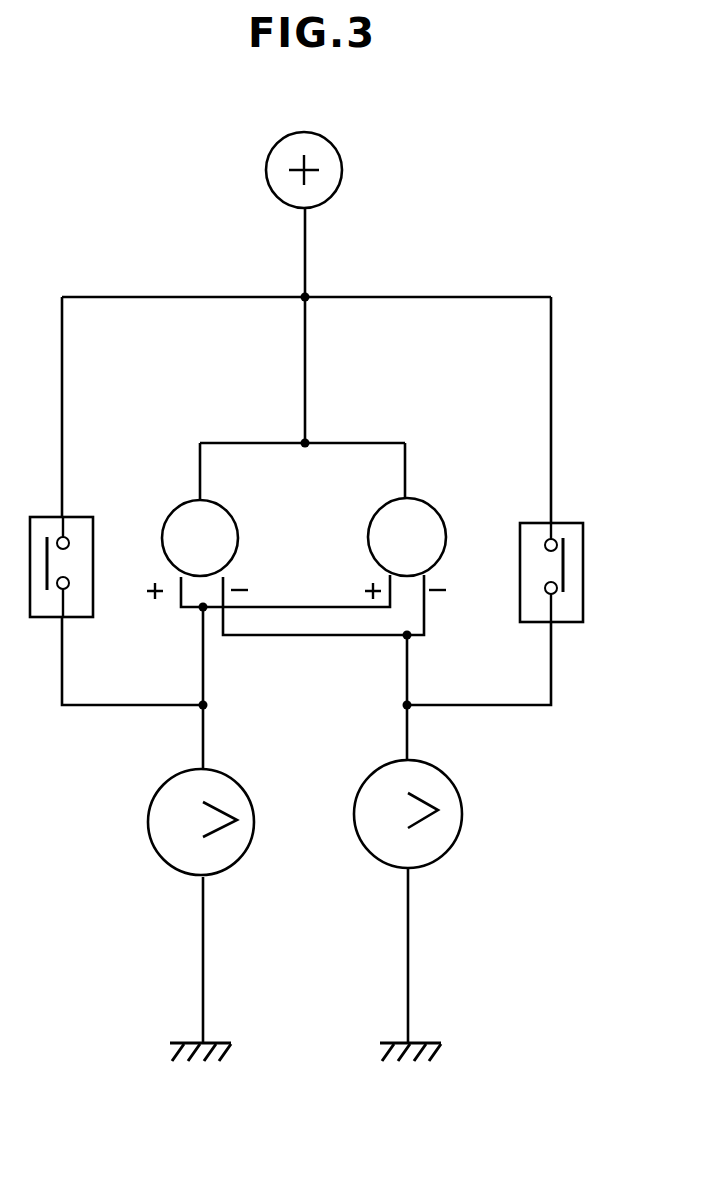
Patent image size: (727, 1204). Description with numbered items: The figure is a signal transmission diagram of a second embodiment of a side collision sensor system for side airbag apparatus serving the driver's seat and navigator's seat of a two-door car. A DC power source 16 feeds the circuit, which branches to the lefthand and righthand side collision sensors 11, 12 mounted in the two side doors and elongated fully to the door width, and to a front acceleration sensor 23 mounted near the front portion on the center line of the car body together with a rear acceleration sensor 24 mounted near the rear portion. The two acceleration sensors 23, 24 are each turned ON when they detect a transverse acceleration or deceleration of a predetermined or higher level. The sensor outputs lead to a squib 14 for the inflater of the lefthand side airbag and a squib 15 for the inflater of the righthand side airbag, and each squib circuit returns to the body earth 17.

The lefthand side collision sensor 11 is at (80, 527).
The righthand side collision sensor 12 is at (573, 530).
The squib 14 is at (228, 785).
The squib 15 is at (444, 783).
The DC power source 16 is at (342, 170).
The body earth 17 is at (217, 1043).
The front acceleration sensor 23 is at (225, 515).
The rear acceleration sensor 24 is at (427, 512).